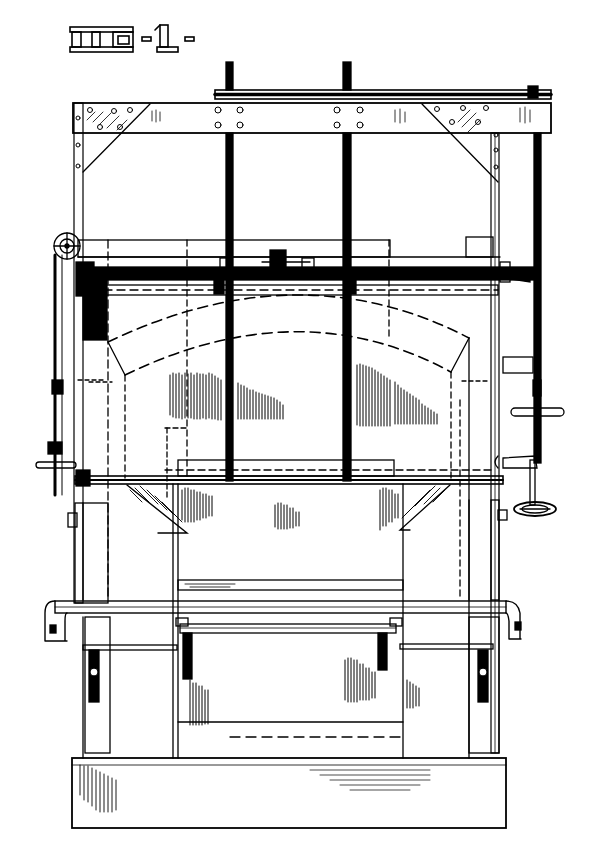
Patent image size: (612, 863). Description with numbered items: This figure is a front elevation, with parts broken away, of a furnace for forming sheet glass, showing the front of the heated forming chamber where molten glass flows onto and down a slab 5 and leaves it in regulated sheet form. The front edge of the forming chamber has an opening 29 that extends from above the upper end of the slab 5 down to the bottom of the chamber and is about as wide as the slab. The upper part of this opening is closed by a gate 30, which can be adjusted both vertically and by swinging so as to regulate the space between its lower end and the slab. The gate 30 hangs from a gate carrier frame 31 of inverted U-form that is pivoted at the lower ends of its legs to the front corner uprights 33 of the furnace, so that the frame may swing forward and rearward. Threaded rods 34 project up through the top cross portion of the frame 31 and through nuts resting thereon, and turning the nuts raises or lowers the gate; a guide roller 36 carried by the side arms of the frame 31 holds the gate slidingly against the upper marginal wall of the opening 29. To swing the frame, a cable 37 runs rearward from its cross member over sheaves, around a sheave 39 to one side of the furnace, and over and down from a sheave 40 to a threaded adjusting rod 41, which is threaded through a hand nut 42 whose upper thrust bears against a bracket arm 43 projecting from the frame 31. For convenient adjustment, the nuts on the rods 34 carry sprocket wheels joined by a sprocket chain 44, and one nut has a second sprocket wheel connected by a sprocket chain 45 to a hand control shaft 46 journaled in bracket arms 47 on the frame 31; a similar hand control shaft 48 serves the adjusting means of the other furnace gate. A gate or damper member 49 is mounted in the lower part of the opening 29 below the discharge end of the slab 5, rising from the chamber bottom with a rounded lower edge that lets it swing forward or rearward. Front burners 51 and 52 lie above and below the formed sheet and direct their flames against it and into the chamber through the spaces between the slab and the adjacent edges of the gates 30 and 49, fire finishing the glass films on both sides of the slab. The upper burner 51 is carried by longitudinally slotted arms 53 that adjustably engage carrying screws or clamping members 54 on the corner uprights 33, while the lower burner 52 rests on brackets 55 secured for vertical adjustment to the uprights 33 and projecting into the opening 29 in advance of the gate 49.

The slab 5 is at (246, 592).
The opening 29 is at (386, 702).
The gate 30 is at (288, 621).
The gate carrier frame 31 is at (155, 288).
The front corner uprights 33 is at (97, 560).
The threaded rods 34 is at (233, 372).
The guide roller 36 is at (340, 486).
The cable 37 is at (161, 240).
The sheave 39 is at (277, 250).
The sheave 40 is at (56, 240).
The threaded adjusting rod 41 is at (53, 418).
The hand nut 42 is at (54, 470).
The bracket arm 43 is at (48, 450).
The sprocket chain 44 is at (306, 262).
The sprocket chain 45 is at (405, 265).
The hand control shaft 46 is at (541, 342).
The bracket arms 47 is at (535, 284).
The hand control shaft 48 is at (542, 392).
The gate or damper member 49 is at (195, 711).
The upper front burner 51 is at (144, 603).
The lower front burner 52 is at (293, 646).
The arms 53 is at (76, 564).
The carrying screws or clamping members 54 is at (506, 518).
The brackets 55 is at (148, 652).